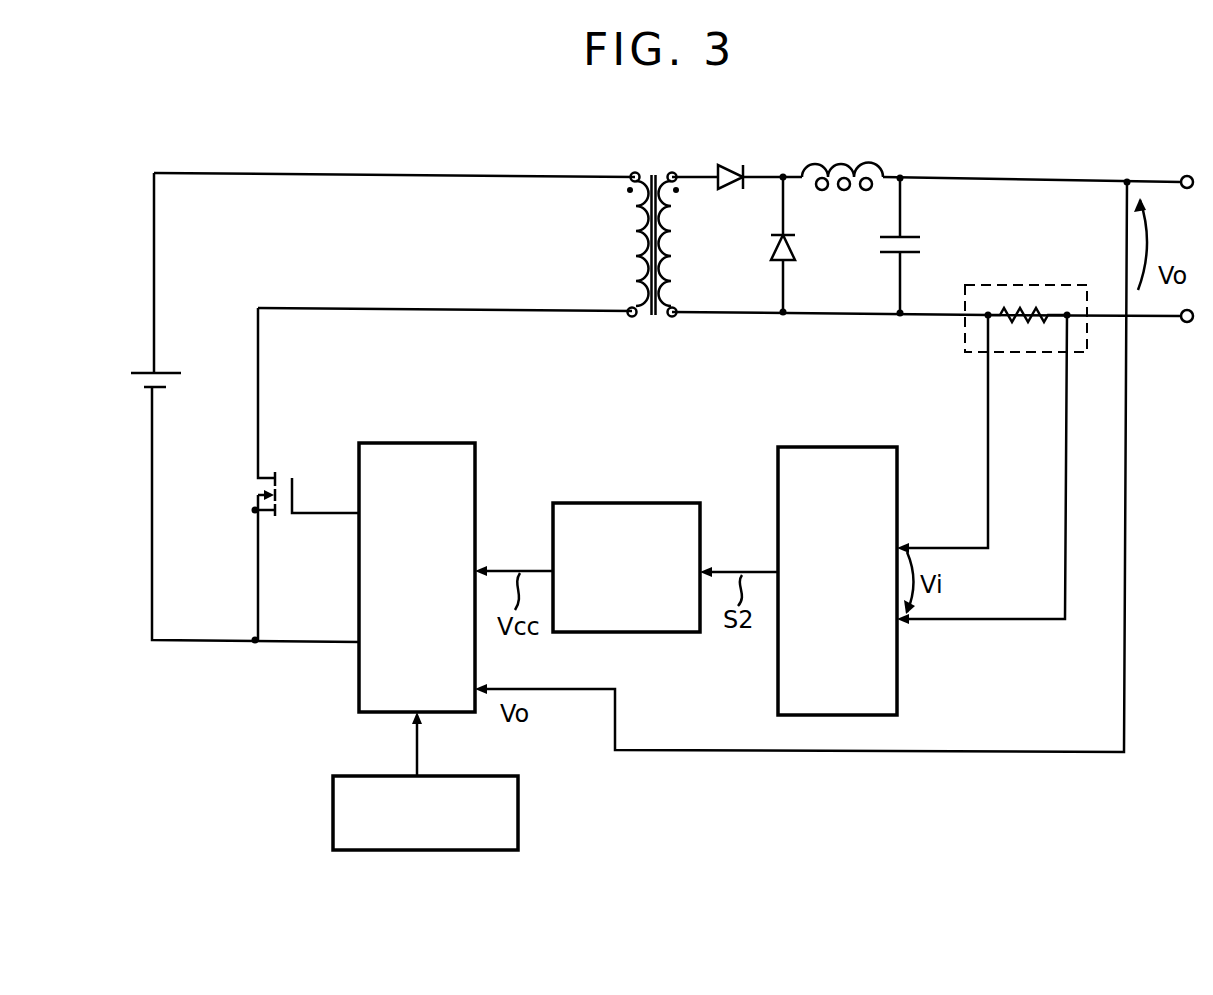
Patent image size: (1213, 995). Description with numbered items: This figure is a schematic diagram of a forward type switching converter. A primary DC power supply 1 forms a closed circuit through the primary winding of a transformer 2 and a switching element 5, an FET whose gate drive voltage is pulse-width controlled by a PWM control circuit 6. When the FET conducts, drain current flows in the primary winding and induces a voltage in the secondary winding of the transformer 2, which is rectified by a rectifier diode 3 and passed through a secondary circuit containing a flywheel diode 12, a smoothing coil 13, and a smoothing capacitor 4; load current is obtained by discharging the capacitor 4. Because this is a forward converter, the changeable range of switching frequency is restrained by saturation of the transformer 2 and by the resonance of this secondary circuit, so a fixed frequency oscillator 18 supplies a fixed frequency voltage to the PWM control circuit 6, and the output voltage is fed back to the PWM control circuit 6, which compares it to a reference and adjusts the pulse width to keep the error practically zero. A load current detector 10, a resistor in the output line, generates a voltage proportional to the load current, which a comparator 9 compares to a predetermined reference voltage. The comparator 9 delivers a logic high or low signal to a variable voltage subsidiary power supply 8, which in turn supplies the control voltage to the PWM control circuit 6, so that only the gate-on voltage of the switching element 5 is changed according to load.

The primary DC power supply 1 is at (140, 372).
The transformer 2 is at (653, 172).
The rectifier diode 3 is at (720, 166).
The smoothing capacitor 4 is at (920, 246).
The switching element 5 is at (265, 478).
The PWM control circuit 6 is at (396, 443).
The variable voltage subsidiary power supply 8 is at (633, 503).
The comparator 9 is at (828, 447).
The load current detector 10 is at (965, 332).
The flywheel diode 12 is at (772, 260).
The smoothing coil 13 is at (855, 172).
The fixed frequency oscillator 18 is at (518, 825).